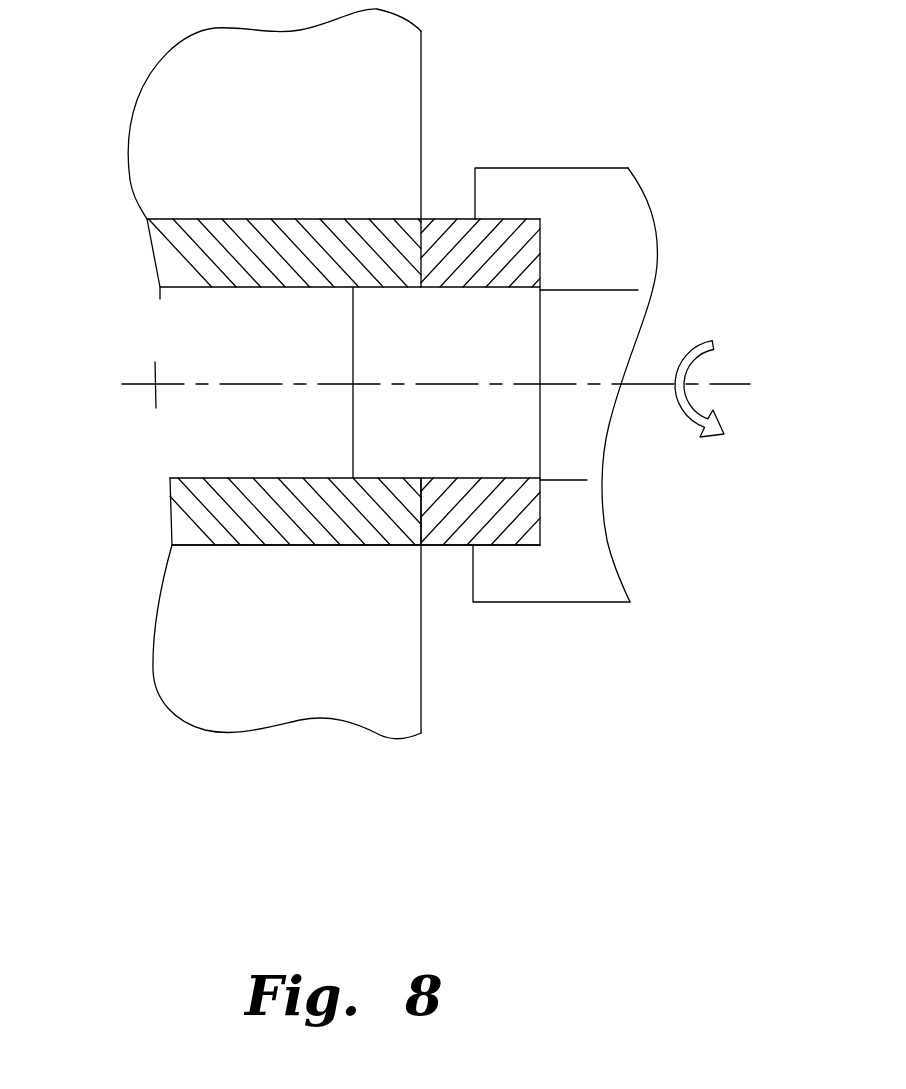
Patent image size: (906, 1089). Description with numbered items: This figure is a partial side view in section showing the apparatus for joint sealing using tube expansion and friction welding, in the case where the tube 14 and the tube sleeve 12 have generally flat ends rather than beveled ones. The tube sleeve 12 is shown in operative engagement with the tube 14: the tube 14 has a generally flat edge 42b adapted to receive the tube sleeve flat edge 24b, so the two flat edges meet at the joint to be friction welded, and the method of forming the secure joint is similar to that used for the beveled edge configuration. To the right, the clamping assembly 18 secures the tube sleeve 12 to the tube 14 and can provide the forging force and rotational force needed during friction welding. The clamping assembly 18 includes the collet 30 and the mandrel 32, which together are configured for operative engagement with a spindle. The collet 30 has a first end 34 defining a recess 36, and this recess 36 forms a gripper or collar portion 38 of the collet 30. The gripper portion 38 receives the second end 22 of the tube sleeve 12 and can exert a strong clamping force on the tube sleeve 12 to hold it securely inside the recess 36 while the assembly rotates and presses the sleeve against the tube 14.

The tube sleeve 12 is at (440, 232).
The tube 14 is at (205, 525).
The clamping assembly 18 is at (505, 624).
The second end 22 is at (540, 428).
The tube sleeve flat edge 24b is at (423, 508).
The collet 30 is at (597, 577).
The mandrel 32 is at (520, 350).
The first end 34 is at (541, 233).
The recess 36 is at (540, 517).
The gripper portion 38 is at (522, 577).
The flat edge 42b is at (418, 533).